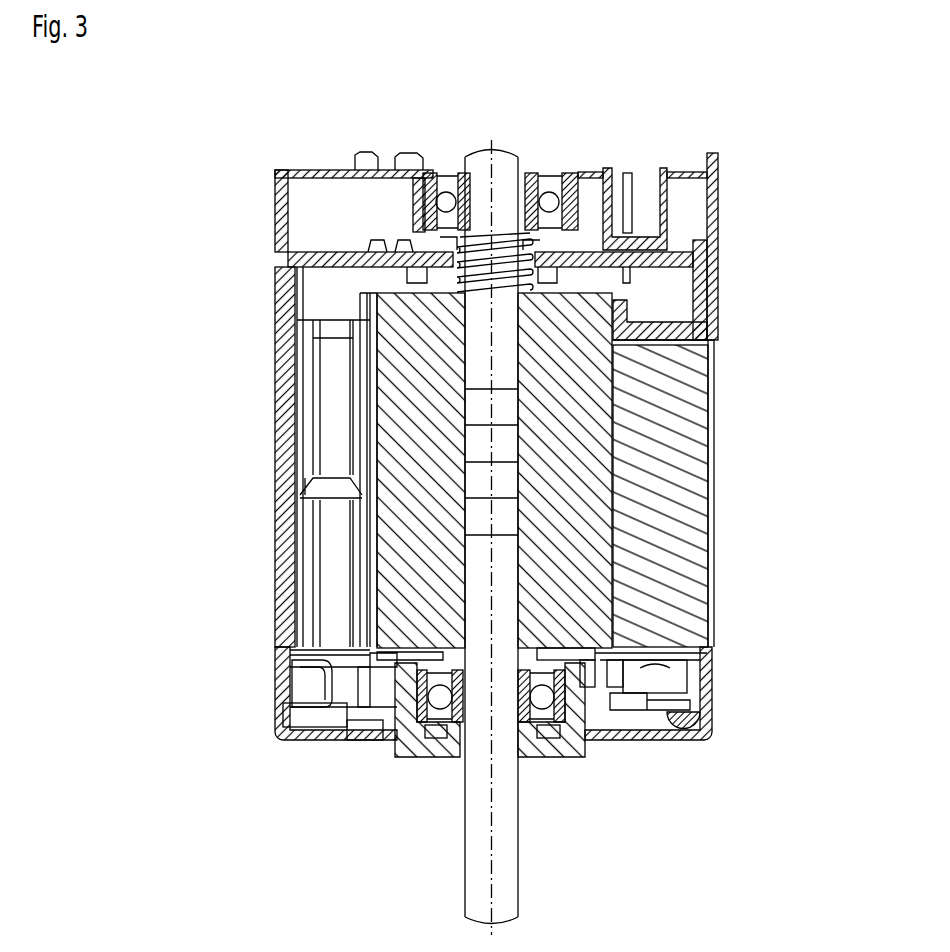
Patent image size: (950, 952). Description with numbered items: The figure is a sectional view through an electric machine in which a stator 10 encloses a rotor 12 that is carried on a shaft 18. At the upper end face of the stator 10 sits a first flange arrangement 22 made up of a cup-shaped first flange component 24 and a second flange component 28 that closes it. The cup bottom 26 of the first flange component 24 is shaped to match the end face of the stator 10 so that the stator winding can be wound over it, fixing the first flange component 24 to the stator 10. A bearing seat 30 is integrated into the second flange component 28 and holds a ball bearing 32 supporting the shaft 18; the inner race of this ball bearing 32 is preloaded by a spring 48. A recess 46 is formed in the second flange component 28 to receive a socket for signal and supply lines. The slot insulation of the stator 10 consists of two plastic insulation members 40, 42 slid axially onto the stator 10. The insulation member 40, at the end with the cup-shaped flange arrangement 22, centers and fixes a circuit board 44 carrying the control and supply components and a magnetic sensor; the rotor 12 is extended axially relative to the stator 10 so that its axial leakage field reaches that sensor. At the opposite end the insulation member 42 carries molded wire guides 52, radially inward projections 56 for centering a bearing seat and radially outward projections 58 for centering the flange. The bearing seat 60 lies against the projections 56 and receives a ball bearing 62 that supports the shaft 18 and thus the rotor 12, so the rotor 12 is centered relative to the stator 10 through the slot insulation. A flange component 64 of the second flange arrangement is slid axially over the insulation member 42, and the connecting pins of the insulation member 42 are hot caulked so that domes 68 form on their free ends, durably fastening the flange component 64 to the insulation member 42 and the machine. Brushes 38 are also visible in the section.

The stator 10 is at (647, 453).
The rotor 12 is at (586, 403).
The shaft 18 is at (472, 775).
The first flange arrangement 22 is at (720, 254).
The first flange component 24 is at (277, 238).
The cup bottom 26 is at (720, 340).
The second flange component 28 is at (308, 170).
The bearing seat 30 is at (390, 170).
The ball bearing 32 is at (440, 185).
The brush 38 is at (290, 450).
The insulation member 40 is at (292, 397).
The insulation member 42 is at (277, 553).
The circuit board 44 is at (683, 235).
The recess 46 is at (652, 200).
The spring 48 is at (500, 233).
The wire guides 52 is at (303, 690).
The projections 56 is at (587, 670).
The projections 58 is at (293, 652).
The bearing seat 60 is at (582, 757).
The ball bearing 62 is at (557, 760).
The flange component 64 is at (277, 715).
The domes 68 is at (685, 725).